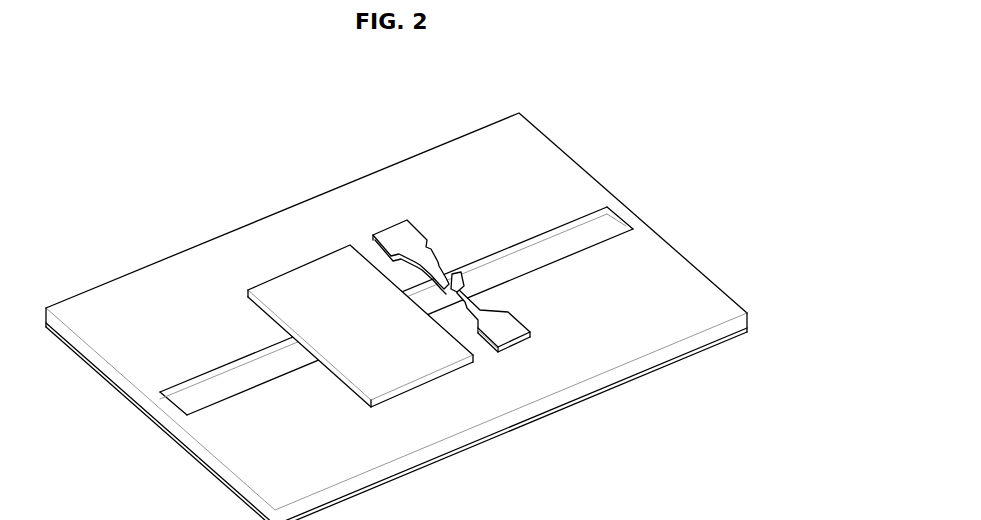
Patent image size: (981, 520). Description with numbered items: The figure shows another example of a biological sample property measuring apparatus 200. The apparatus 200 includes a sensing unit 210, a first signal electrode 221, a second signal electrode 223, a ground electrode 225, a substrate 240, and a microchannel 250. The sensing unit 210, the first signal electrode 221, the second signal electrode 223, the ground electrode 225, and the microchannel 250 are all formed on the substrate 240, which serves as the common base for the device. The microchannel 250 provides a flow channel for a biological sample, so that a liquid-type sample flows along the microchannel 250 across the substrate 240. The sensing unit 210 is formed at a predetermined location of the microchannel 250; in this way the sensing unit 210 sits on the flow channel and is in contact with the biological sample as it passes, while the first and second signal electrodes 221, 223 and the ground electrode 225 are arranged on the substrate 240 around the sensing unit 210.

The biological sample property measuring apparatus 200 is at (280, 100).
The sensing unit 210 is at (451, 282).
The first signal electrode 221 is at (402, 234).
The second signal electrode 223 is at (513, 327).
The ground electrode 225 is at (403, 358).
The substrate 240 is at (555, 163).
The microchannel 250 is at (608, 222).